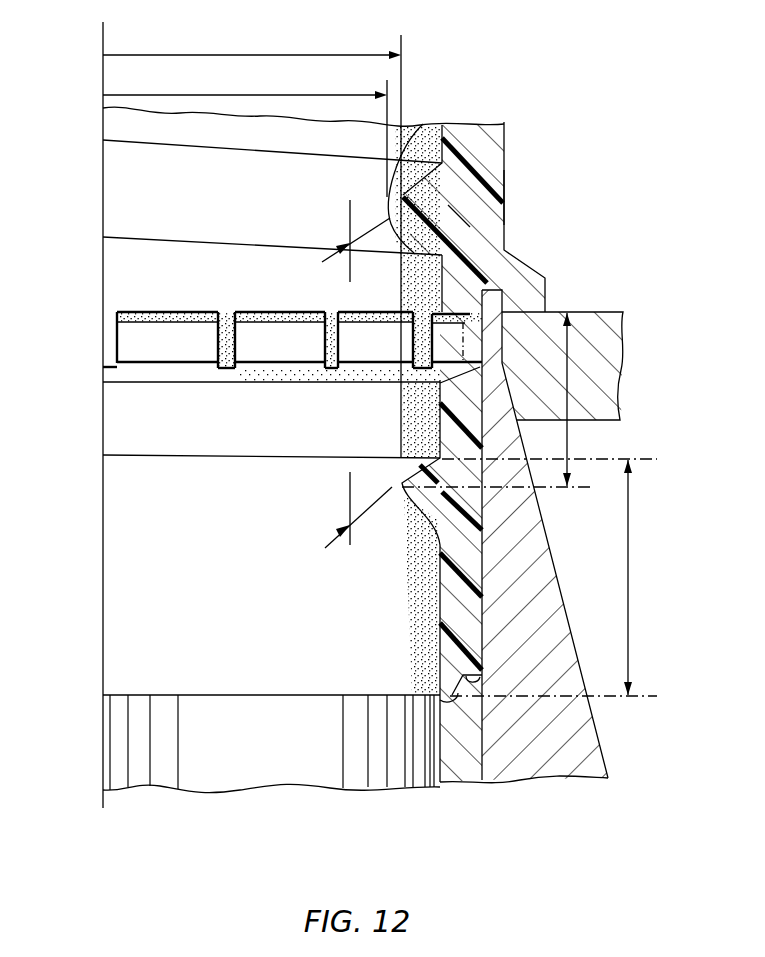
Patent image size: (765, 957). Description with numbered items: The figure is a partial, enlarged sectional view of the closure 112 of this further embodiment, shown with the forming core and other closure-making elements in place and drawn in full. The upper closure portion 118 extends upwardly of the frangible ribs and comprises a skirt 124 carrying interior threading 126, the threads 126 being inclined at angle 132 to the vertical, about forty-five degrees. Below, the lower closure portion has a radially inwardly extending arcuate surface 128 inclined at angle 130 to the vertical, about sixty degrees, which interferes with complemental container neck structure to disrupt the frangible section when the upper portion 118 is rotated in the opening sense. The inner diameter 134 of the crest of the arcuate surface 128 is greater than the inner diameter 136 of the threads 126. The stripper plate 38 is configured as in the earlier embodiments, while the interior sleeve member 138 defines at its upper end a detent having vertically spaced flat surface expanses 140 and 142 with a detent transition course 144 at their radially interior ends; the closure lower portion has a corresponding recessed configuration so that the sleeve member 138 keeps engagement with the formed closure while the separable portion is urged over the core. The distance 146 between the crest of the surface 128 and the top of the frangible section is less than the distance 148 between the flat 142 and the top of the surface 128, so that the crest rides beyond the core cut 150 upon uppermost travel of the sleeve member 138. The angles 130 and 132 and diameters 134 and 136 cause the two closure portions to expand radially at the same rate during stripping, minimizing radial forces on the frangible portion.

The inner diameter of the crest of arcuate surface 134 is at (296, 54).
The inner diameter of threads 136 is at (296, 96).
The interior threading 126 is at (412, 164).
The thread inclination angle 132 is at (357, 232).
The closure 112 is at (487, 112).
The upper closure portion 118 is at (514, 197).
The skirt 124 is at (473, 233).
The interior sleeve member 138 is at (467, 766).
The core cut 150 is at (468, 323).
The stripper plate 38 is at (610, 347).
The distance between crest of arcuate surface and top of frangible section 146 is at (572, 437).
The distance between flat of sleeve member and top of arcuate surface 148 is at (630, 594).
The radially inwardly extending arcuate surface 128 is at (420, 478).
The arcuate surface inclination angle 130 is at (364, 583).
The detent transition course 144 is at (440, 676).
The flat surface expanse 142 is at (440, 702).
The flat surface expanse 140 is at (482, 682).